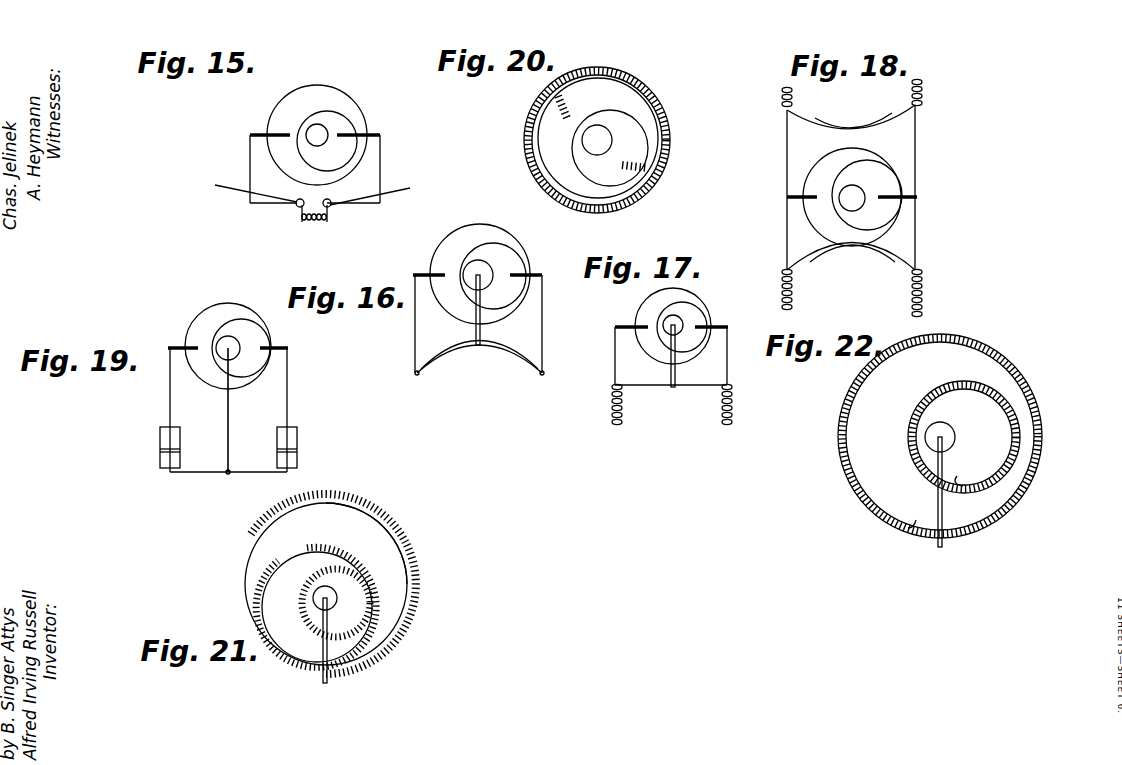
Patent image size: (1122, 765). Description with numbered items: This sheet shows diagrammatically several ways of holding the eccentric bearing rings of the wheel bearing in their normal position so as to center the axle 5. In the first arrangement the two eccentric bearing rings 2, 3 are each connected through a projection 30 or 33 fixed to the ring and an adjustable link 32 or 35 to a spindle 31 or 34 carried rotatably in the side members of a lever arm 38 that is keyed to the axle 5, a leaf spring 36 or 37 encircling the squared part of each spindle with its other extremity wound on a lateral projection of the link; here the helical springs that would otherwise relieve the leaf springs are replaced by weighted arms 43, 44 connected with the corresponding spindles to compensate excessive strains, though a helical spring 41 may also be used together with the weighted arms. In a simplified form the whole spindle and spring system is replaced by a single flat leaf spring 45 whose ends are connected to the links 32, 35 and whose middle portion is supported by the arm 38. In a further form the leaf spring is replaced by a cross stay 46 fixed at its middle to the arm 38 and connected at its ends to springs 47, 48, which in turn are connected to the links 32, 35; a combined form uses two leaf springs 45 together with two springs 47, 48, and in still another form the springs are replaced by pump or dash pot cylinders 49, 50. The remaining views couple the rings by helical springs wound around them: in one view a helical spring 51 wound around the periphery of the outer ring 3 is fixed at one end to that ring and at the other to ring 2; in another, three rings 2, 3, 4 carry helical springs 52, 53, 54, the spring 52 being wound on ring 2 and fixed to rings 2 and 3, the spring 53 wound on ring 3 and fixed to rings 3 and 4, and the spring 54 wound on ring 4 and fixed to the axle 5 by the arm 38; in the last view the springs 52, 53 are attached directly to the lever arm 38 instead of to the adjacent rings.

In FIG. 20, the eccentric bearing ring 2 is at (628, 138).
In FIG. 18, the eccentric bearing ring 2 is at (880, 184).
In FIG. 19, the eccentric bearing ring 2 is at (255, 337).
In FIG. 22, the eccentric bearing ring 2 is at (992, 460).
In FIG. 21, the eccentric bearing ring 2 is at (362, 634).
In FIG. 20, the eccentric bearing ring 3 is at (620, 103).
In FIG. 18, the eccentric bearing ring 3 is at (872, 230).
In FIG. 19, the eccentric bearing ring 3 is at (235, 314).
In FIG. 22, the eccentric bearing ring 3 is at (982, 510).
In FIG. 21, the eccentric bearing ring 3 is at (295, 638).
In FIG. 21, the eccentric bearing ring 4 is at (366, 526).
In FIG. 15, the axle 5 is at (323, 128).
In FIG. 20, the axle 5 is at (585, 146).
In FIG. 18, the axle 5 is at (864, 200).
In FIG. 19, the axle 5 is at (237, 345).
In FIG. 22, the axle 5 is at (948, 442).
In FIG. 21, the axle 5 is at (337, 598).
In FIG. 15, the projection 30 is at (341, 135).
In FIG. 18, the projection 30 is at (917, 197).
In FIG. 16, the projection 30 is at (530, 273).
In FIG. 17, the projection 30 is at (720, 326).
In FIG. 15, the spindle 31 is at (330, 200).
In FIG. 15, the link 32 is at (381, 173).
In FIG. 18, the link 32 is at (916, 148).
In FIG. 16, the link 32 is at (541, 318).
In FIG. 17, the link 32 is at (728, 355).
In FIG. 19, the link 32 is at (287, 395).
In FIG. 15, the projection 33 is at (265, 133).
In FIG. 18, the projection 33 is at (787, 197).
In FIG. 16, the projection 33 is at (428, 274).
In FIG. 17, the projection 33 is at (630, 326).
In FIG. 15, the spindle 34 is at (298, 200).
In FIG. 15, the link 35 is at (250, 155).
In FIG. 18, the link 35 is at (790, 138).
In FIG. 16, the link 35 is at (414, 315).
In FIG. 17, the link 35 is at (615, 358).
In FIG. 19, the link 35 is at (170, 397).
In FIG. 15, the leaf spring 36 is at (367, 204).
In FIG. 15, the leaf spring 37 is at (283, 204).
In FIG. 16, the lever arm 38 is at (481, 339).
In FIG. 17, the lever arm 38 is at (676, 377).
In FIG. 19, the lever arm 38 is at (222, 413).
In FIG. 22, the lever arm 38 is at (937, 496).
In FIG. 21, the lever arm 38 is at (328, 683).
In FIG. 15, the helical spring 41 is at (314, 232).
In FIG. 15, the weighted arm 43 is at (367, 193).
In FIG. 15, the weighted arm 44 is at (263, 193).
In FIG. 18, the leaf spring 45 is at (860, 130).
In FIG. 16, the leaf spring 45 is at (508, 358).
In FIG. 17, the cross stay 46 is at (715, 386).
In FIG. 18, the spring 47 is at (785, 112).
In FIG. 17, the spring 47 is at (611, 410).
In FIG. 18, the spring 48 is at (921, 103).
In FIG. 17, the spring 48 is at (733, 413).
In FIG. 19, the dash pot cylinder 49 is at (160, 453).
In FIG. 19, the dash pot cylinder 50 is at (293, 445).
In FIG. 20, the helical spring 51 is at (644, 197).
In FIG. 22, the helical spring 52 is at (1020, 447).
In FIG. 21, the helical spring 52 is at (372, 610).
In FIG. 22, the helical spring 53 is at (975, 534).
In FIG. 21, the helical spring 53 is at (372, 584).
In FIG. 21, the helical spring 54 is at (410, 557).